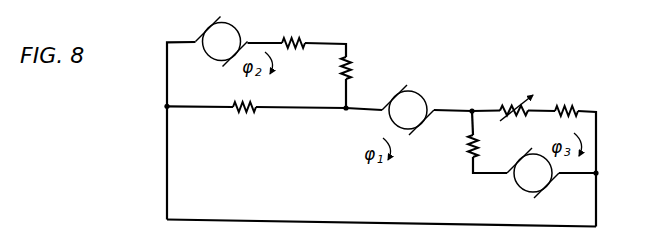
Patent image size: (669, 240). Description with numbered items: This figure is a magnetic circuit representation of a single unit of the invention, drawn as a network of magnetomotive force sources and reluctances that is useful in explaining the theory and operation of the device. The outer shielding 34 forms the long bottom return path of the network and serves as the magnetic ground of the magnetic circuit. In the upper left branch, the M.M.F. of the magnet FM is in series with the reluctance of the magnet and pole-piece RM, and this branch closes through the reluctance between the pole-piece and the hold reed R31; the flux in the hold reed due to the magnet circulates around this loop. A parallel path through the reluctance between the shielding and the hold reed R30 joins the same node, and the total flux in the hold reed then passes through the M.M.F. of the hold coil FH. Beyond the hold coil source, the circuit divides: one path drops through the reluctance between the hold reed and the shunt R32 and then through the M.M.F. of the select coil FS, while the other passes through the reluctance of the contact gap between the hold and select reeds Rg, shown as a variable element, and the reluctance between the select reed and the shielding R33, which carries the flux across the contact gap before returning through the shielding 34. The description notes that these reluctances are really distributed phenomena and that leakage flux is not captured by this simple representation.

The outer shielding 34 is at (304, 220).
The reluctance of magnet and pole-piece RM is at (293, 26).
The reluctance between shielding and hold reed R30 is at (240, 121).
The reluctance between pole-piece and hold reed R31 is at (351, 70).
The reluctance between hold reed and shunt R32 is at (468, 137).
The reluctance between select reed and shielding R33 is at (568, 95).
The reluctance of the contact gap Rg is at (505, 100).
The M.M.F. of magnet FM is at (225, 35).
The M.M.F. of hold coil FH is at (412, 103).
The M.M.F. of select coil FS is at (529, 178).